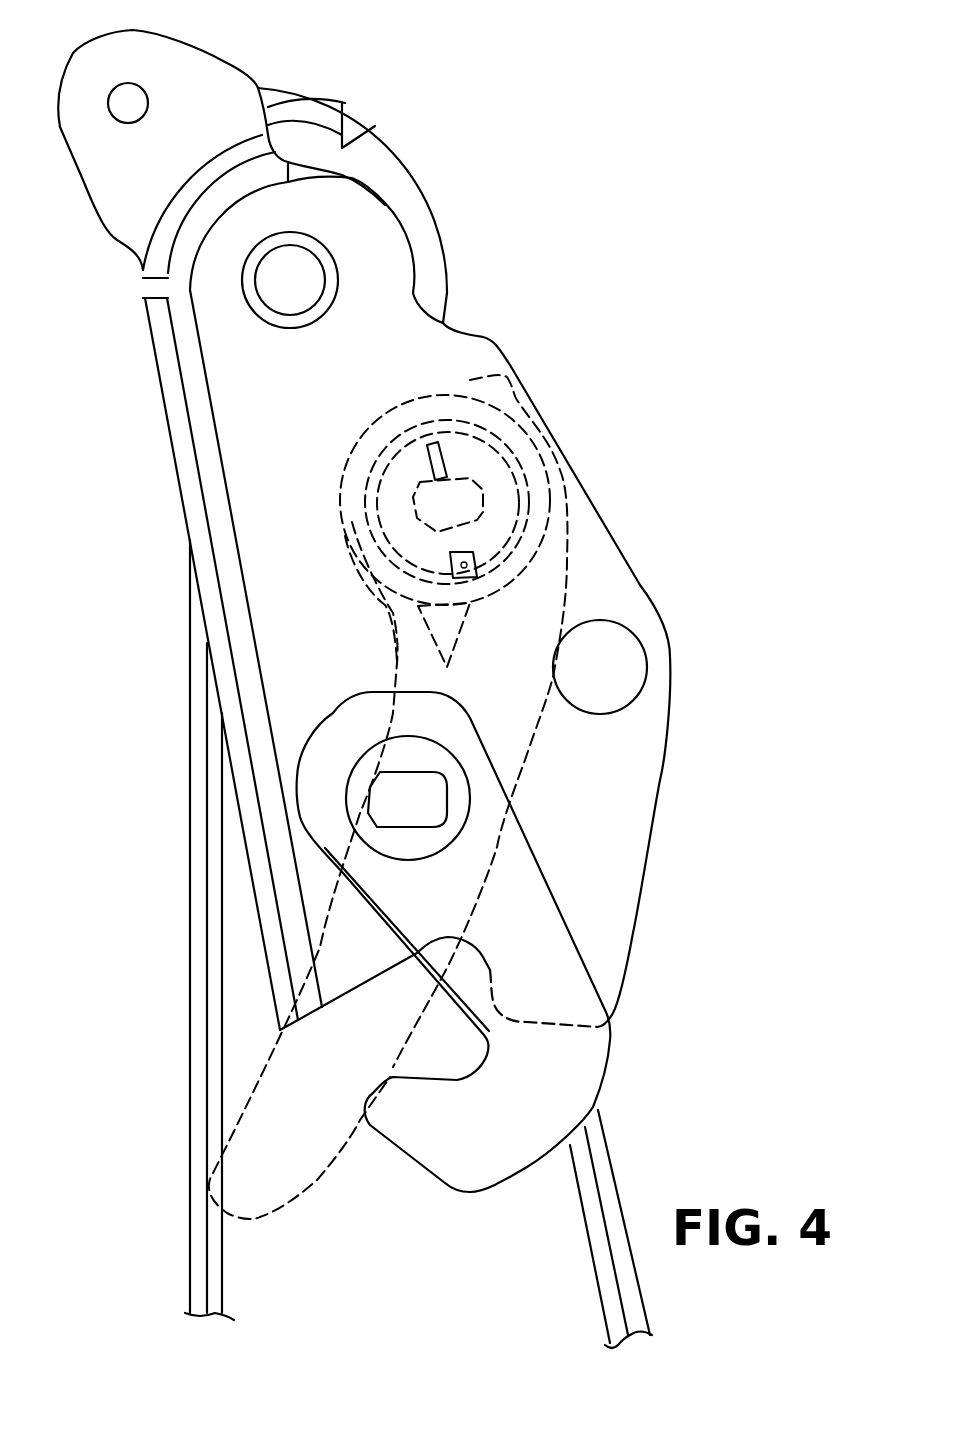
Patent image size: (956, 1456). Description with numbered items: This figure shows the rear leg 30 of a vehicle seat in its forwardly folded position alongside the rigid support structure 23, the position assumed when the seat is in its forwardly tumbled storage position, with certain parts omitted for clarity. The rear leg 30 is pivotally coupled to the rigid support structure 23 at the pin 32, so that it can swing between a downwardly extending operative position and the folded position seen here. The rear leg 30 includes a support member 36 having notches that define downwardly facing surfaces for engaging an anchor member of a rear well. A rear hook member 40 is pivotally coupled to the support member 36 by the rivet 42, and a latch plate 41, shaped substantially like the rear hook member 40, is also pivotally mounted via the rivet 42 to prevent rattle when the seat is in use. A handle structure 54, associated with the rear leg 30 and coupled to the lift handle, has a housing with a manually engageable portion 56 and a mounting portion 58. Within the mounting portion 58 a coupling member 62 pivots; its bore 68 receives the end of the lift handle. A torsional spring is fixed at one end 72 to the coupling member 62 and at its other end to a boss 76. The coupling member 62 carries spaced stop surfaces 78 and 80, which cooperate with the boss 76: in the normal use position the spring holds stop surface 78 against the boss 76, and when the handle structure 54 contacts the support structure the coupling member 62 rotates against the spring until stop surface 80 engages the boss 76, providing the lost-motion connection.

The rigid support structure 23 is at (190, 937).
The rear leg 30 is at (645, 567).
The pin 32 is at (337, 276).
The support member 36 is at (645, 815).
The rear hook member 40 is at (475, 1027).
The latch plate 41 is at (534, 1110).
The rivet 42 is at (447, 790).
The handle structure 54 is at (538, 566).
The manually engageable portion 56 is at (290, 1182).
The mounting portion 58 is at (380, 420).
The coupling member 62 is at (540, 448).
The bore 68 is at (522, 373).
The end of torsional spring 72 is at (452, 430).
The boss 76 is at (384, 602).
The stop surface 78 is at (383, 517).
The stop surface 80 is at (477, 578).